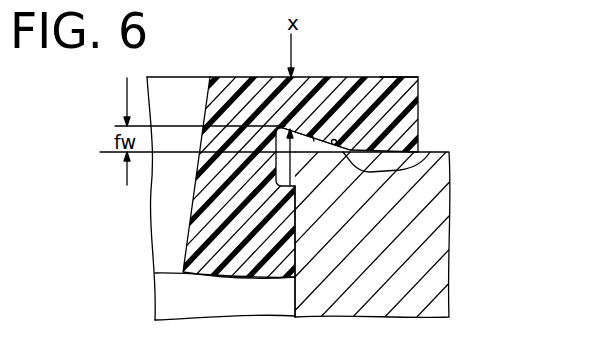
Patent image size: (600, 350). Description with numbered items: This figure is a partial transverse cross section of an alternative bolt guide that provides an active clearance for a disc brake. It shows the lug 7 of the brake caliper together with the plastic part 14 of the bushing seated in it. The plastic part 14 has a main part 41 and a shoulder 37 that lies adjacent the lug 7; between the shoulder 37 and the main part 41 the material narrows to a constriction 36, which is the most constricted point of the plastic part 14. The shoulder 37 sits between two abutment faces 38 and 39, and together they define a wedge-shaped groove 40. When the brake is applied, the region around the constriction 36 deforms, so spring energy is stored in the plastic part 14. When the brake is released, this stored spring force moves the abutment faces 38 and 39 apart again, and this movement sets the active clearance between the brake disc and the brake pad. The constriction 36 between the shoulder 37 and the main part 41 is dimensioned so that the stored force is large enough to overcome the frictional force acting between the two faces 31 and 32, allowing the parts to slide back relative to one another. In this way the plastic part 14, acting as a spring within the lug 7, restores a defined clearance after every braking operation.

The lug 7 is at (437, 211).
The plastic part 14 is at (198, 200).
The face 31 is at (288, 276).
The face 32 is at (292, 308).
The constriction 36 is at (288, 104).
The shoulder 37 is at (387, 132).
The abutment face 38 is at (336, 140).
The abutment face 39 is at (430, 152).
The wedge-shaped groove 40 is at (314, 135).
The main part 41 is at (218, 262).